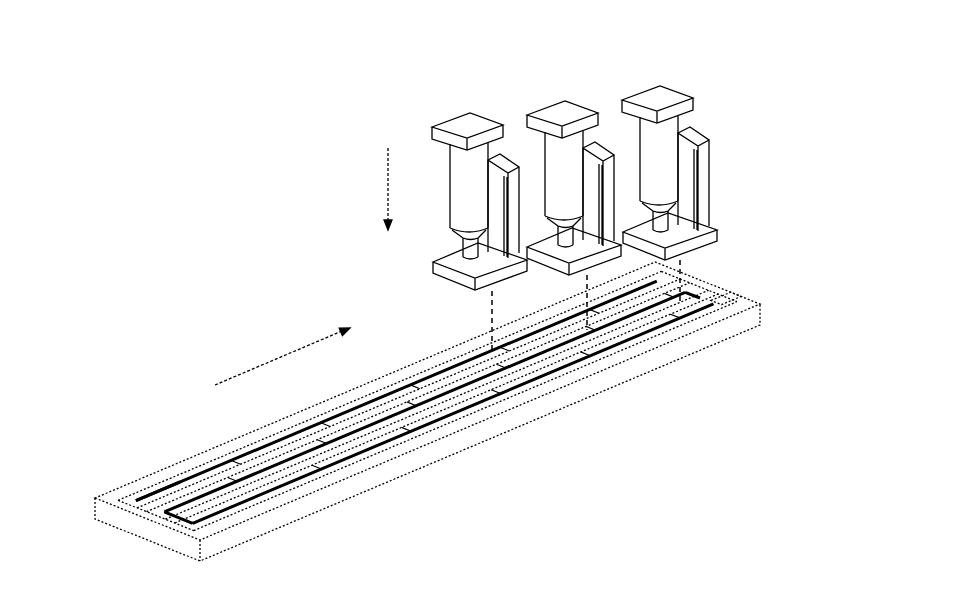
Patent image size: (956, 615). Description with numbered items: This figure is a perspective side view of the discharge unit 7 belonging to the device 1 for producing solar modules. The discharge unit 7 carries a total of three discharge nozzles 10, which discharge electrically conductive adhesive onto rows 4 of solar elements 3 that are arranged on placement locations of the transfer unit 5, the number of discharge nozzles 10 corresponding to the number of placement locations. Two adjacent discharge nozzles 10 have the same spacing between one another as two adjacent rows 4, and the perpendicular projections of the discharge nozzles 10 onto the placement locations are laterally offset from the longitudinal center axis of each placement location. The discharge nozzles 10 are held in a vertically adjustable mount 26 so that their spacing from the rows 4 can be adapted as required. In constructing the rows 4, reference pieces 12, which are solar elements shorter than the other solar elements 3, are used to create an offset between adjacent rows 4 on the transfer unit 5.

The device 1 is at (158, 246).
The solar element 3 is at (330, 466).
The row 4 is at (145, 495).
The transfer unit 5 is at (634, 368).
The discharge unit 7 is at (737, 85).
The discharge nozzle 10 is at (420, 272).
The reference piece 12 is at (162, 505).
The vertically adjustable mount 26 is at (736, 190).